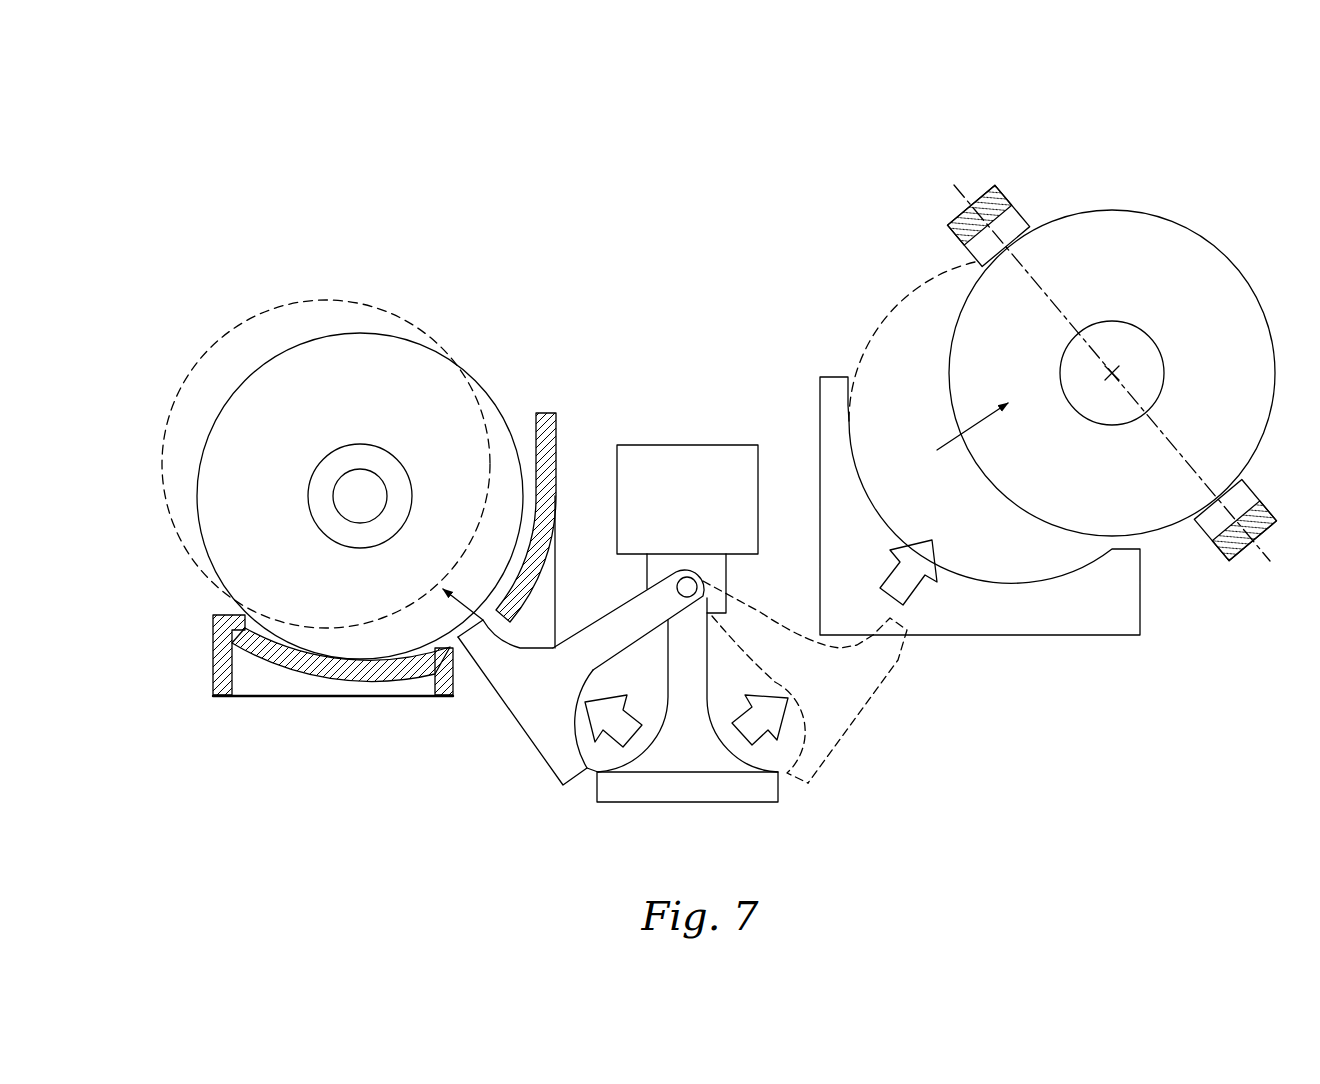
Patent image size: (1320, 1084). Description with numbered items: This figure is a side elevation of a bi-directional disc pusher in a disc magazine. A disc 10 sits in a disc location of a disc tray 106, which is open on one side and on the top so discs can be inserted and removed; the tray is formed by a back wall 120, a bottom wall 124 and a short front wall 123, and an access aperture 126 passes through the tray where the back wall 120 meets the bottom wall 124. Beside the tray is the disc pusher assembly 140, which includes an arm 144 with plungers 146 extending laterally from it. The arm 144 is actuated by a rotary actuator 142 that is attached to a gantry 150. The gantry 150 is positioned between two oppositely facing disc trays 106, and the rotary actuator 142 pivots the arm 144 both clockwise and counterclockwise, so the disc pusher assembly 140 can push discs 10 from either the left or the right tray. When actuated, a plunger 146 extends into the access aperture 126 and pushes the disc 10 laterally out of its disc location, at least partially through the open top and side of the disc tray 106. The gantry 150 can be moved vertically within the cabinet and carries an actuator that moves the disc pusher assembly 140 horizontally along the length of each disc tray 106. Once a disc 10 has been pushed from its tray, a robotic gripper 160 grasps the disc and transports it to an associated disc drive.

The disc 10 is at (360, 332).
The disc tray 106 is at (388, 719).
The back wall 120 is at (556, 447).
The short front wall 123 is at (213, 660).
The bottom wall 124 is at (316, 693).
The access aperture 126 is at (462, 653).
The disc pusher assembly 140 is at (730, 713).
The rotary actuator 142 is at (647, 563).
The arm 144 is at (690, 708).
The plunger 146 is at (622, 787).
The gantry 150 is at (691, 435).
The robotic gripper 160 is at (1034, 186).